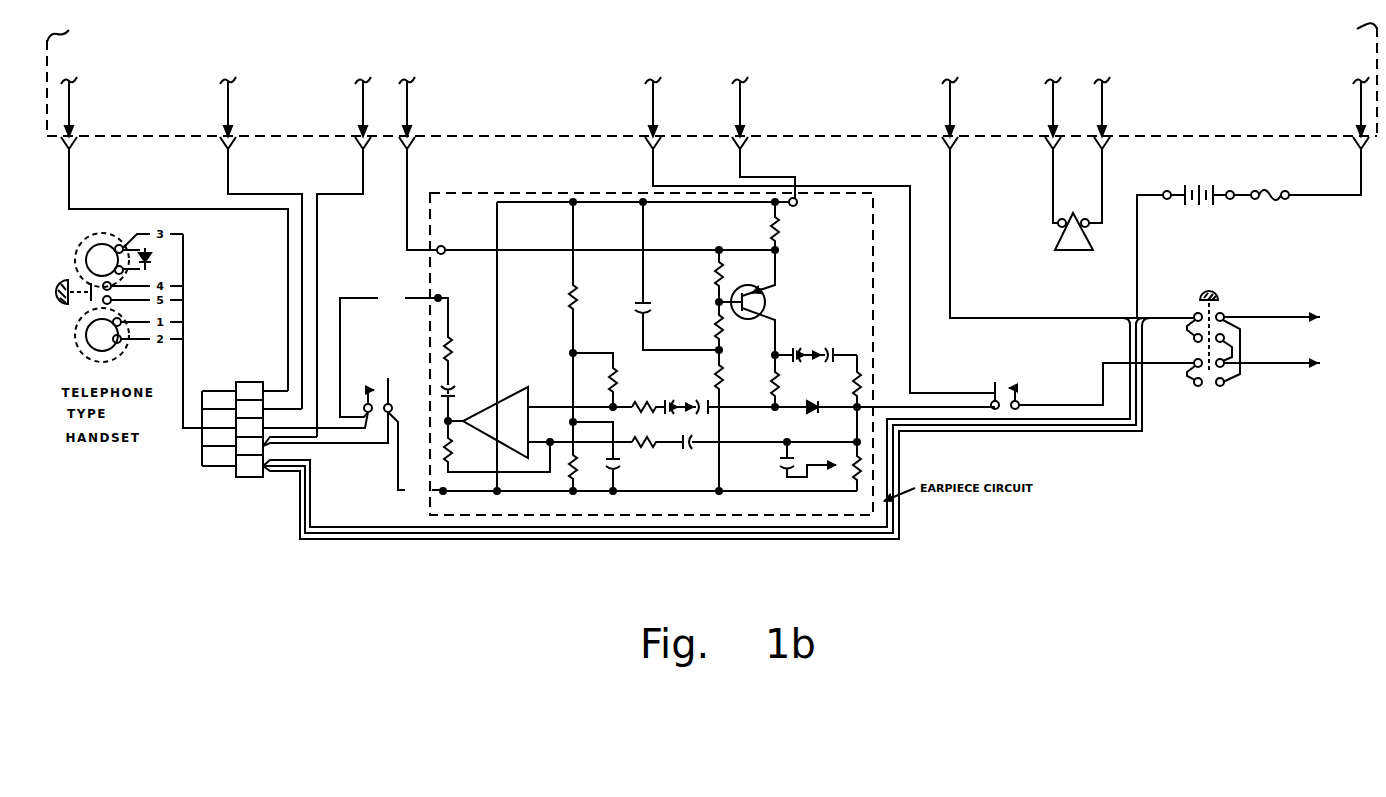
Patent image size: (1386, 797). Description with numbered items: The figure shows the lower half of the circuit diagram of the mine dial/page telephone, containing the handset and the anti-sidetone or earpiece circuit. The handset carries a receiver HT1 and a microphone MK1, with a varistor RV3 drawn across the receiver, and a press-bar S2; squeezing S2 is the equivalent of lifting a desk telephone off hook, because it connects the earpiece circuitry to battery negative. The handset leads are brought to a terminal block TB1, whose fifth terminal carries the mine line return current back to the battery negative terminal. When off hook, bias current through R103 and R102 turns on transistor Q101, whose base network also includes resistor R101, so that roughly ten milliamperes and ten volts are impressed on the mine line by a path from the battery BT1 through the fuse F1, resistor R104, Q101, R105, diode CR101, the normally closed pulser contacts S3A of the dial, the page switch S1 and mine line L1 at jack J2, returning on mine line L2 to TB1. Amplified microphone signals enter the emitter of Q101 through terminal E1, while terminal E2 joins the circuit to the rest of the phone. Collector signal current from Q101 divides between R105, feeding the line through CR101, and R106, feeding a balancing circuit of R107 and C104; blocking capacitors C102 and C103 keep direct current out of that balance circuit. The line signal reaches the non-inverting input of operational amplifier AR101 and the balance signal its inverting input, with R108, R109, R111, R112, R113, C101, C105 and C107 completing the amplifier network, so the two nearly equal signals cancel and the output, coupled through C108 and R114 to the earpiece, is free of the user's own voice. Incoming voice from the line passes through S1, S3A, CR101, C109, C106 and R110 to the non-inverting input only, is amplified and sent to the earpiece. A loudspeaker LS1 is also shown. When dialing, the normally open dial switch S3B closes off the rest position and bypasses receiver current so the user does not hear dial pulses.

The handset receiver HT1 is at (129, 260).
The handset microphone MK1 is at (129, 335).
The varistor RV3 is at (158, 259).
The press-bar S2 is at (115, 303).
The terminal block TB1 is at (240, 402).
The dial switch S3B is at (391, 395).
The pulser contacts S3A is at (1085, 368).
The terminal E1 is at (606, 242).
The terminal E2 is at (803, 204).
The operational amplifier AR101 is at (488, 422).
The resistor R101 is at (700, 276).
The resistor R102 is at (700, 326).
The resistor R103 is at (737, 420).
The resistor R104 is at (792, 226).
The resistor R105 is at (794, 381).
The resistor R106 is at (873, 398).
The resistor R107 is at (839, 466).
The resistor R108 is at (554, 277).
The resistor R109 is at (554, 422).
The resistor R110 is at (646, 396).
The resistor R111 is at (657, 434).
The resistor R112 is at (595, 380).
The resistor R113 is at (497, 446).
The resistor R114 is at (459, 341).
The capacitor C101 is at (659, 276).
The blocking capacitor C102 is at (795, 348).
The blocking capacitor C103 is at (840, 348).
The capacitor C104 is at (790, 459).
The capacitor C105 is at (613, 456).
The capacitor C106 is at (668, 392).
The capacitor C107 is at (770, 453).
The capacitor C108 is at (459, 403).
The capacitor C109 is at (731, 401).
The transistor Q101 is at (763, 302).
The diode CR101 is at (816, 415).
The speaker LS1 is at (1078, 233).
The battery BT1 is at (1185, 242).
The fuse F1 is at (1263, 176).
The page switch S1 is at (1223, 326).
The line jack J2 is at (1333, 340).
The mine line L1 is at (1288, 375).
The mine line L2 is at (1288, 309).